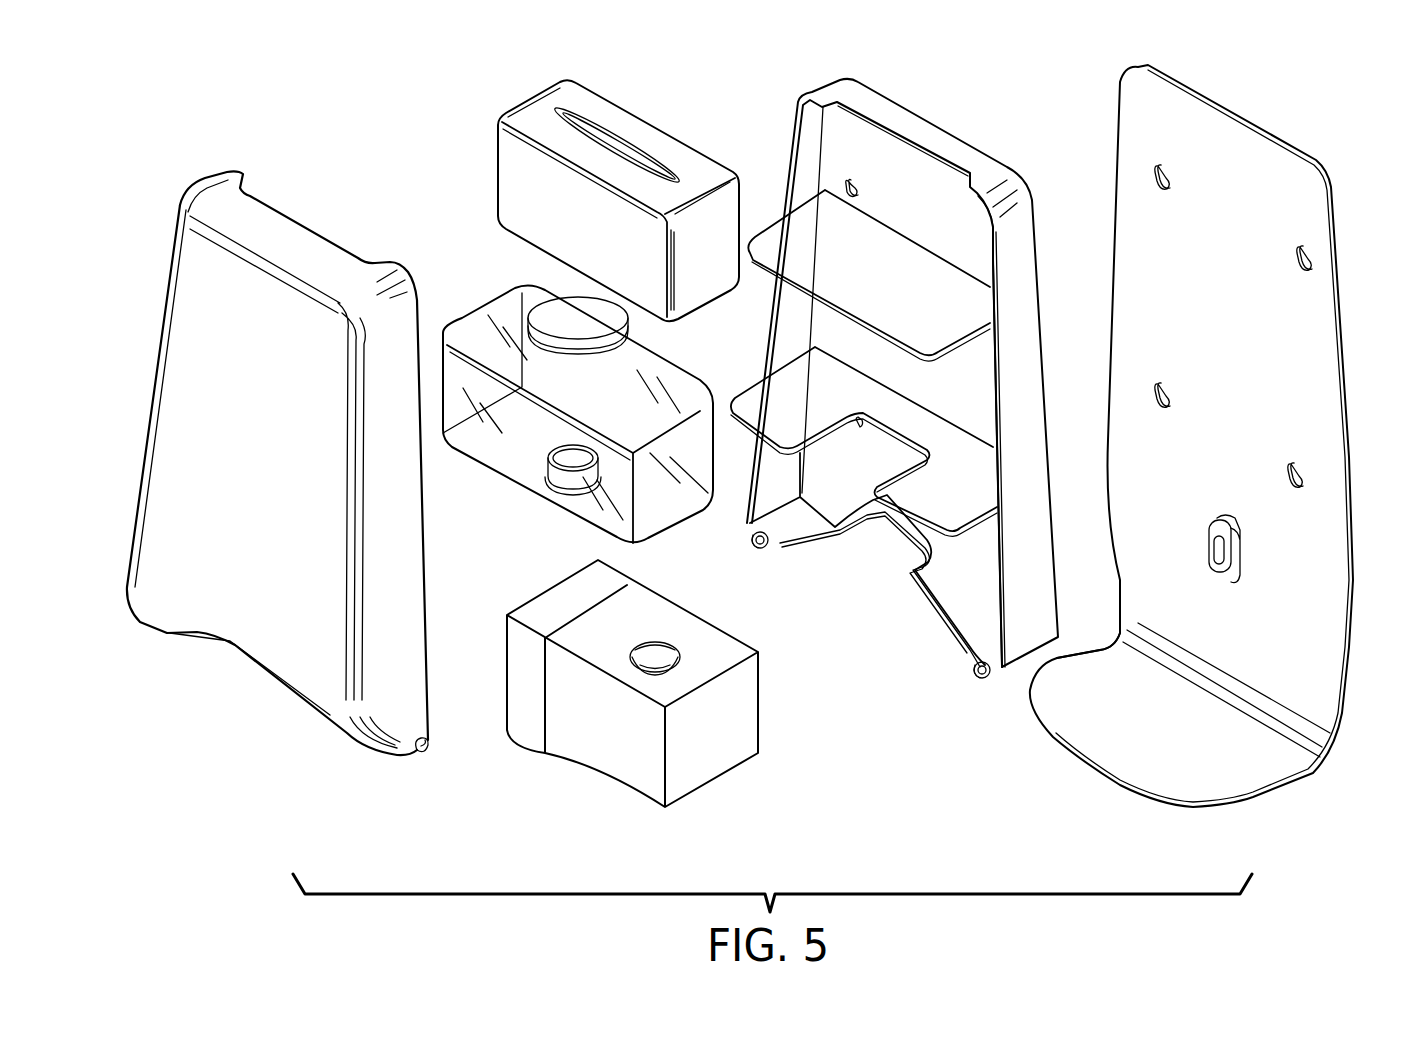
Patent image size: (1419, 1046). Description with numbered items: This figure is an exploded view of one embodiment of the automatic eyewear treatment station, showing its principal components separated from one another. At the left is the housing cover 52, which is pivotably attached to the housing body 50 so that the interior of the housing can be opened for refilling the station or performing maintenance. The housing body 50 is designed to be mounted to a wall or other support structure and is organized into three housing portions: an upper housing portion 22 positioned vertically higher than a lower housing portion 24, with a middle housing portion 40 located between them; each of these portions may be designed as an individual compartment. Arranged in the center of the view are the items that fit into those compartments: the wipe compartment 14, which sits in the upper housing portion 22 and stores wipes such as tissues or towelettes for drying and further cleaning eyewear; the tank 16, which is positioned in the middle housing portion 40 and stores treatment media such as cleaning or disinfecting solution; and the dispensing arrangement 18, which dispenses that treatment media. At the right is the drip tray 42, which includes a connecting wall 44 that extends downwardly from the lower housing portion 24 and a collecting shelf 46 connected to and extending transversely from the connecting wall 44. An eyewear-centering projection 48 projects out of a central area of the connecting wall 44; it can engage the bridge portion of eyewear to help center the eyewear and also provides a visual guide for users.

The wipe compartment 14 is at (535, 108).
The tank 16 is at (490, 322).
The dispensing arrangement 18 is at (732, 745).
The upper housing portion 22 is at (935, 230).
The lower housing portion 24 is at (980, 540).
The middle housing portion 40 is at (945, 392).
The drip tray 42 is at (1220, 473).
The connecting wall 44 is at (1283, 412).
The collecting shelf 46 is at (1250, 766).
The eyewear-centering projection 48 is at (1225, 560).
The housing body 50 is at (920, 370).
The housing cover 52 is at (290, 187).